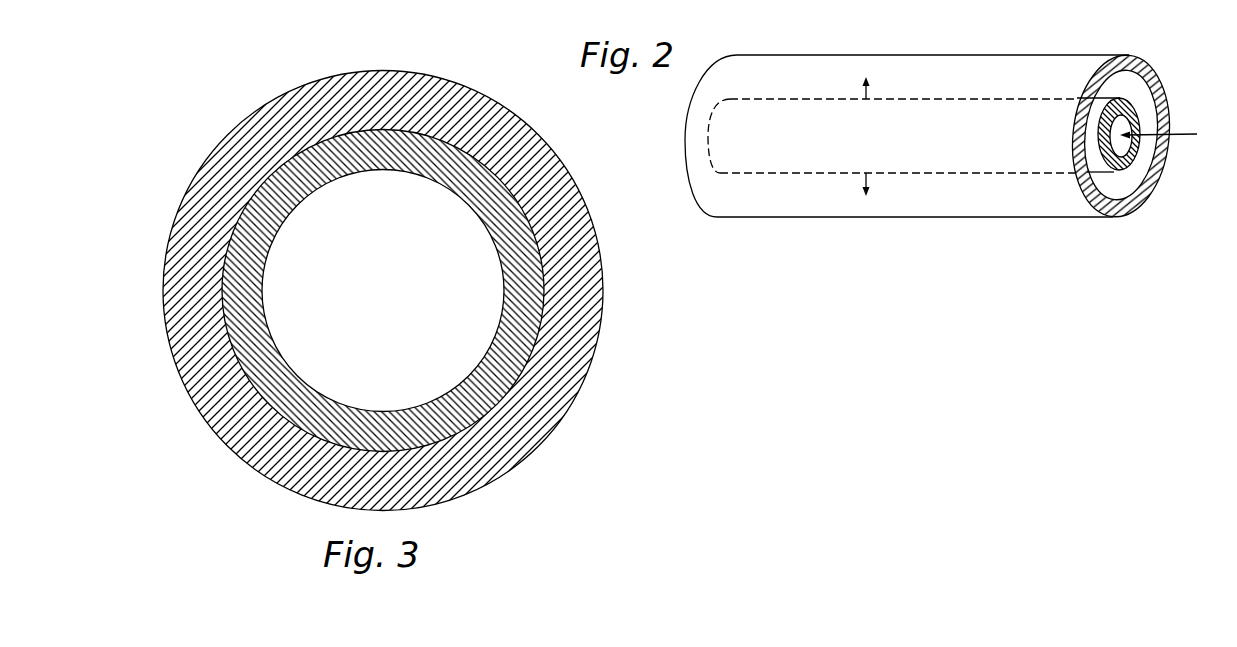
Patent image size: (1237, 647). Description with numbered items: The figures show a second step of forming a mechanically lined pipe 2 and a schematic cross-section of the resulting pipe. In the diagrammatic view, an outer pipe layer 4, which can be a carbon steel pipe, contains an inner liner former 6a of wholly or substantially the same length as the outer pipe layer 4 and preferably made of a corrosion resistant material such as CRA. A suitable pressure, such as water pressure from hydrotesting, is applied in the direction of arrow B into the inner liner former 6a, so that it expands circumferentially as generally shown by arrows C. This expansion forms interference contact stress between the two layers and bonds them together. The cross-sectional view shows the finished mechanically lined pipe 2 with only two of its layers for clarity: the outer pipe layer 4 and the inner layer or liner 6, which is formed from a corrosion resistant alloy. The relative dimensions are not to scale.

In FIG. 3, the mechanically lined pipe 2 is at (168, 128).
In FIG. 2, the outer pipe layer 4 is at (1063, 55).
In FIG. 3, the outer pipe layer 4 is at (602, 320).
In FIG. 3, the inner layer or liner 6 is at (270, 333).
In FIG. 2, the inner liner former 6a is at (990, 100).
In FIG. 2, the arrow B is at (1169, 136).
In FIG. 2, the arrows C is at (865, 136).